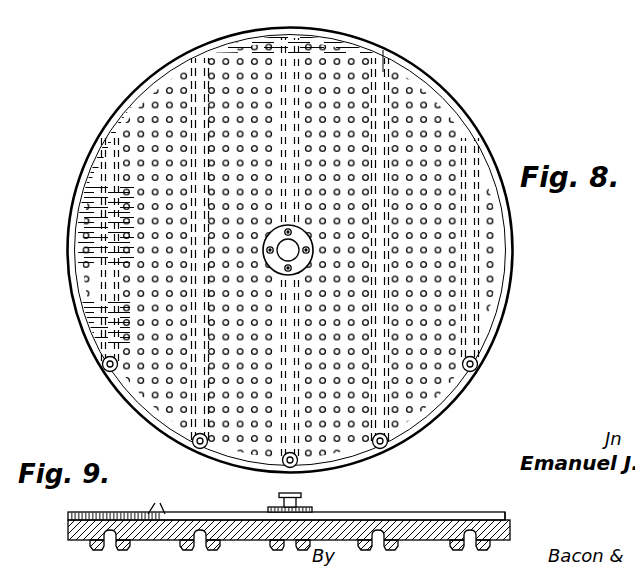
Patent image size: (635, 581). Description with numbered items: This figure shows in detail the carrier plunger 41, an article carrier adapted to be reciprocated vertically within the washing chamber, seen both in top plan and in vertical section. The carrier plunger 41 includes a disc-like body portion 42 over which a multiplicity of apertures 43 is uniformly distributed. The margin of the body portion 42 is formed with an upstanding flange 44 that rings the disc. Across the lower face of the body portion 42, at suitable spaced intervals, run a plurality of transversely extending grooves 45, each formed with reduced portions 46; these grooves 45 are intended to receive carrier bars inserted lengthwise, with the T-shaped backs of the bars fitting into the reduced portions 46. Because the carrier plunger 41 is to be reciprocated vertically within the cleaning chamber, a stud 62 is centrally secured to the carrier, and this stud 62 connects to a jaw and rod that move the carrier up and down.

In FIG. 8, the carrier plunger 41 is at (84, 158).
In FIG. 8, the disc-like body portion 42 is at (97, 270).
In FIG. 9, the disc-like body portion 42 is at (496, 514).
In FIG. 8, the apertures 43 is at (412, 406).
In FIG. 9, the apertures 43 is at (161, 497).
In FIG. 8, the upstanding flange 44 is at (507, 283).
In FIG. 9, the upstanding flange 44 is at (68, 514).
In FIG. 8, the transversely extending grooves 45 is at (388, 96).
In FIG. 9, the transversely extending grooves 45 is at (118, 545).
In FIG. 8, the reduced portions 46 is at (383, 68).
In FIG. 9, the reduced portions 46 is at (200, 540).
In FIG. 8, the stud 62 is at (277, 239).
In FIG. 9, the stud 62 is at (282, 494).